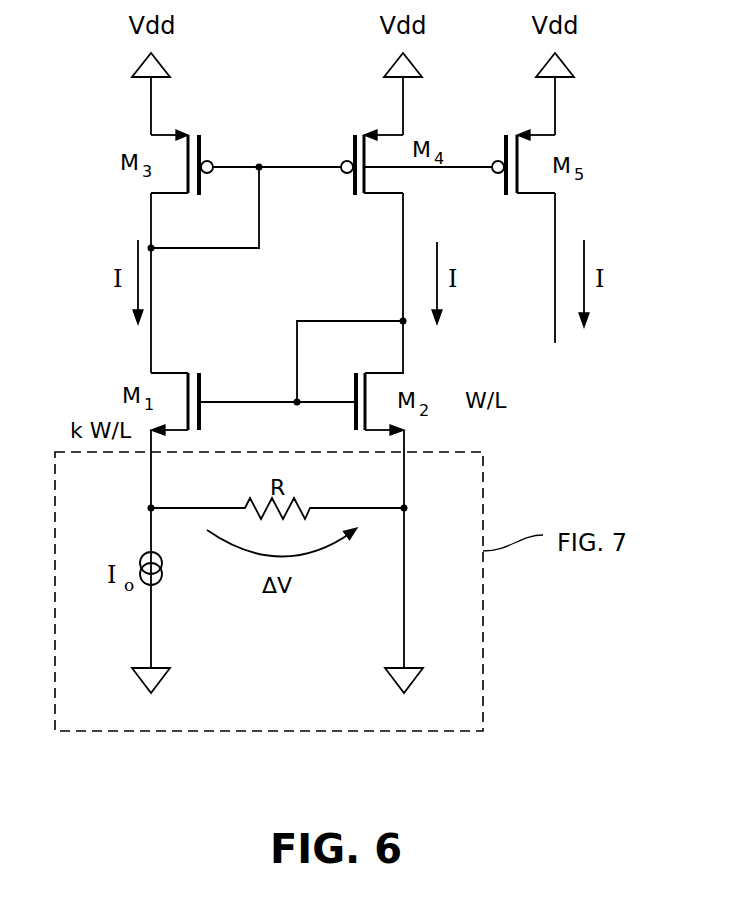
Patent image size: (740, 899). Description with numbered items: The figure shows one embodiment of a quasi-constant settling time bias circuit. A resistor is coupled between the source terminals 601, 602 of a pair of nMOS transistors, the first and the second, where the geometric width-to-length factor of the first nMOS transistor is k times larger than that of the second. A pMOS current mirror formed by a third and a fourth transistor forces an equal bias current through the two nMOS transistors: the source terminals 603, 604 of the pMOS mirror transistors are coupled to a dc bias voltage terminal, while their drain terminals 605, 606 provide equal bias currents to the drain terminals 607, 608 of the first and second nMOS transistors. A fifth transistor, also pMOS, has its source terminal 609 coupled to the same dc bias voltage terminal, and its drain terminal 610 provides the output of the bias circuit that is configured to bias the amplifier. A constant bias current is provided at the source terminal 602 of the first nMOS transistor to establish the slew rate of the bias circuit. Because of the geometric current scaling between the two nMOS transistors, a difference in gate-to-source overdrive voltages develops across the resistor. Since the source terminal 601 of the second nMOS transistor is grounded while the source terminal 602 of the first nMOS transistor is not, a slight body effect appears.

The source terminal of transistor M2 601 is at (390, 428).
The source terminal of transistor M1 602 is at (178, 431).
The source terminal of transistor M3 603 is at (150, 134).
The source terminal of transistor M4 604 is at (390, 133).
The drain terminal of transistor M3 605 is at (150, 193).
The drain terminal of transistor M4 606 is at (391, 191).
The drain terminal of transistor M1 607 is at (150, 372).
The drain terminal of transistor M2 608 is at (390, 373).
The source terminal of transistor M5 609 is at (550, 136).
The drain terminal of transistor M5 610 is at (540, 192).